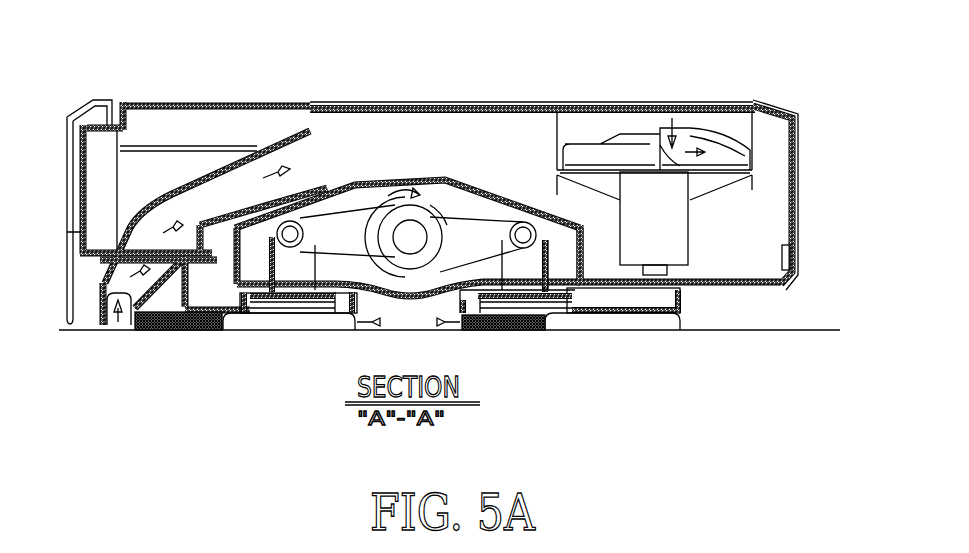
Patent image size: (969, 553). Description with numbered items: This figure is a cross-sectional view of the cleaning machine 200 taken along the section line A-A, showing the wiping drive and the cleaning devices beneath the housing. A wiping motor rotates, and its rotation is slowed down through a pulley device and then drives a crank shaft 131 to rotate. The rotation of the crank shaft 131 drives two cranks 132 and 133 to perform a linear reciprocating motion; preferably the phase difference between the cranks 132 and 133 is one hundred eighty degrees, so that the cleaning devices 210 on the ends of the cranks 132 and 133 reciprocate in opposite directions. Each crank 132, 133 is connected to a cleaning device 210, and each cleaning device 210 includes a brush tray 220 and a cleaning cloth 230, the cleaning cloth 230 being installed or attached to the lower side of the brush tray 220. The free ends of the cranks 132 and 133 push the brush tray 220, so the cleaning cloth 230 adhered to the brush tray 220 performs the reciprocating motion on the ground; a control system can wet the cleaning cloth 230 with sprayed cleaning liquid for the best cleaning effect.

The cleaning machine 200 is at (432, 212).
The crank shaft 131 is at (417, 210).
The crank 132 is at (363, 190).
The crank 133 is at (483, 215).
The cleaning device 210 is at (315, 398).
The brush tray 220 is at (265, 330).
The cleaning cloth 230 is at (205, 330).